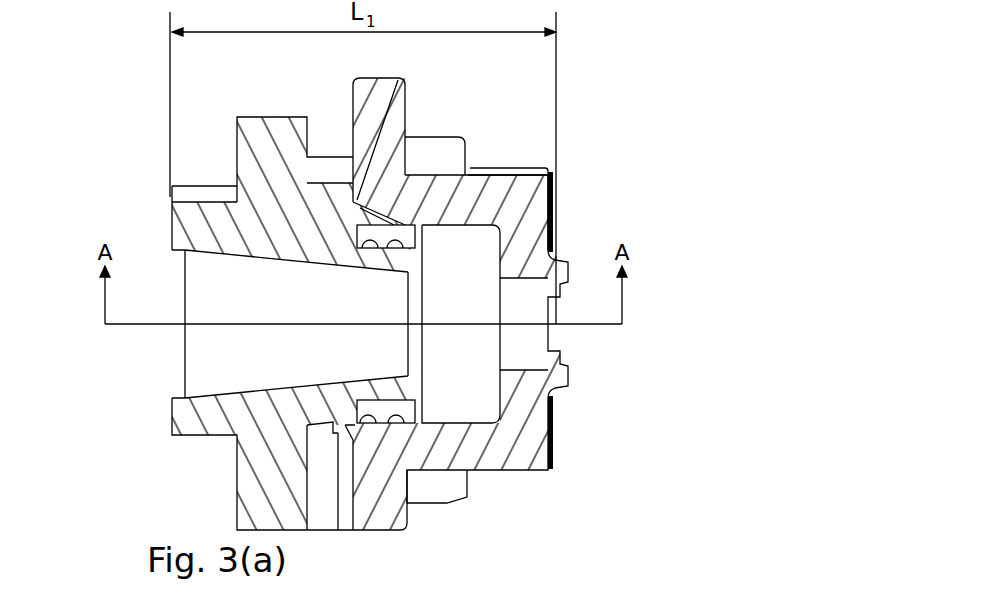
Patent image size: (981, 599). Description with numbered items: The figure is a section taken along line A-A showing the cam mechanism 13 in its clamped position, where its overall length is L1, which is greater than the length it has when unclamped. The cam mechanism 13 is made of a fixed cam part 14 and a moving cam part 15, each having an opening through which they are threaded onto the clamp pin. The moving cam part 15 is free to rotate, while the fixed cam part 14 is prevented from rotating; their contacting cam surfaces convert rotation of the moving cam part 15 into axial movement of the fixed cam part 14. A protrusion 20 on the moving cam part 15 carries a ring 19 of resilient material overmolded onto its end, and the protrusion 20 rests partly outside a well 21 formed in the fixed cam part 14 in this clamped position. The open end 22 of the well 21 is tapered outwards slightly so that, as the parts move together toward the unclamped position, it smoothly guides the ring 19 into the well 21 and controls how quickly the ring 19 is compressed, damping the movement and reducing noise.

The cam mechanism 13 is at (513, 162).
The fixed cam part 14 is at (535, 215).
The moving cam part 15 is at (183, 237).
The ring 19 is at (407, 233).
The protrusion 20 is at (393, 410).
The well 21 is at (475, 378).
The open end of the well 22 is at (360, 207).